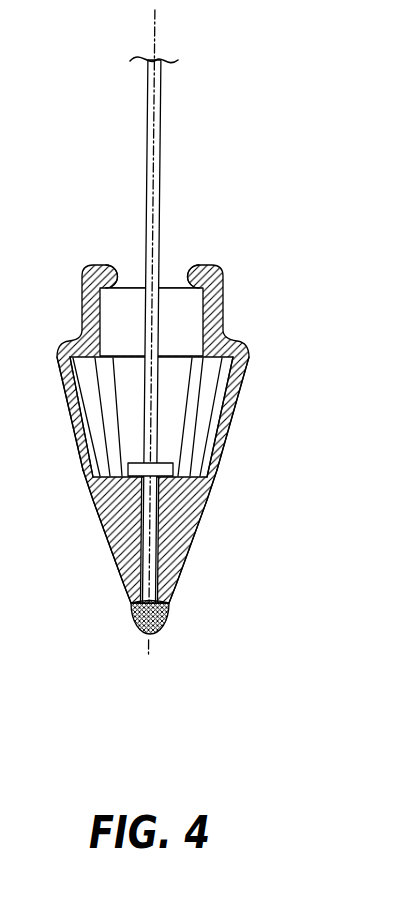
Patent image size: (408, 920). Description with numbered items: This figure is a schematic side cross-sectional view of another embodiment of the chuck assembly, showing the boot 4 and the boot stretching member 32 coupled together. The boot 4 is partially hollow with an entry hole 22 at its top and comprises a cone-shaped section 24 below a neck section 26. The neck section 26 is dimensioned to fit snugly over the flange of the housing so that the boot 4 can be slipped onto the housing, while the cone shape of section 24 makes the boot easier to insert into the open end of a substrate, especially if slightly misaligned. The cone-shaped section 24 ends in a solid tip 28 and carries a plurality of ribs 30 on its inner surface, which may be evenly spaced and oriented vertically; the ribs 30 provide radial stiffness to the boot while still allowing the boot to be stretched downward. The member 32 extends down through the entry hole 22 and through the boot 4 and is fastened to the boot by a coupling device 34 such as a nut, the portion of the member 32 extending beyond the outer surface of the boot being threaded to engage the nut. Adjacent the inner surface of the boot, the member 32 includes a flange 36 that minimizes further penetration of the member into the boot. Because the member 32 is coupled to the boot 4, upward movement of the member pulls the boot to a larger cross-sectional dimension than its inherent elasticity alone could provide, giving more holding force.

The boot 4 is at (143, 351).
The entry hole 22 is at (170, 273).
The cone-shaped section 24 is at (229, 433).
The neck section 26 is at (224, 311).
The solid tip 28 is at (178, 559).
The ribs 30 is at (116, 434).
The boot stretching member 32 is at (147, 137).
The coupling device 34 is at (164, 624).
The flange 36 is at (173, 470).